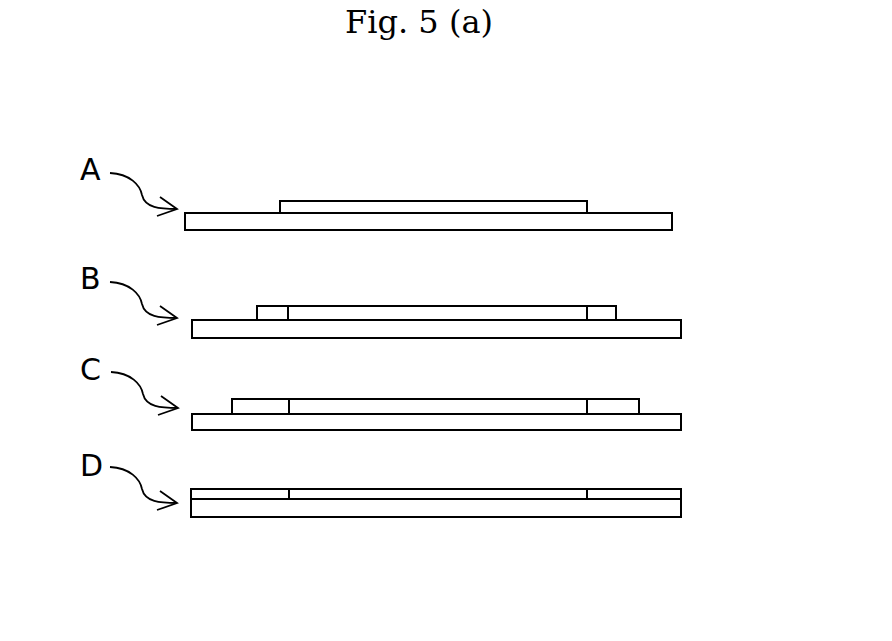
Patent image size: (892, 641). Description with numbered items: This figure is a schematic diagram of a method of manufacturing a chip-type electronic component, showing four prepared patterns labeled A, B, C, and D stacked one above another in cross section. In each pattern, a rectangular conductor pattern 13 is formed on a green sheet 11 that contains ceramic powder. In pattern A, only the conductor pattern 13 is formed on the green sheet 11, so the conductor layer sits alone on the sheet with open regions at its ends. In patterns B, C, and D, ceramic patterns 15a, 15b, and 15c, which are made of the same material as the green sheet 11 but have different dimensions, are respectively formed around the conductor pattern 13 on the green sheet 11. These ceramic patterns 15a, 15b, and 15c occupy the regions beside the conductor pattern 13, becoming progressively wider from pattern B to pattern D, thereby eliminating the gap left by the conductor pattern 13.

The green sheet 11 is at (627, 218).
The conductor pattern 13 is at (450, 207).
The ceramic pattern 15a is at (270, 312).
The ceramic pattern 15b is at (260, 400).
The ceramic pattern 15c is at (243, 488).